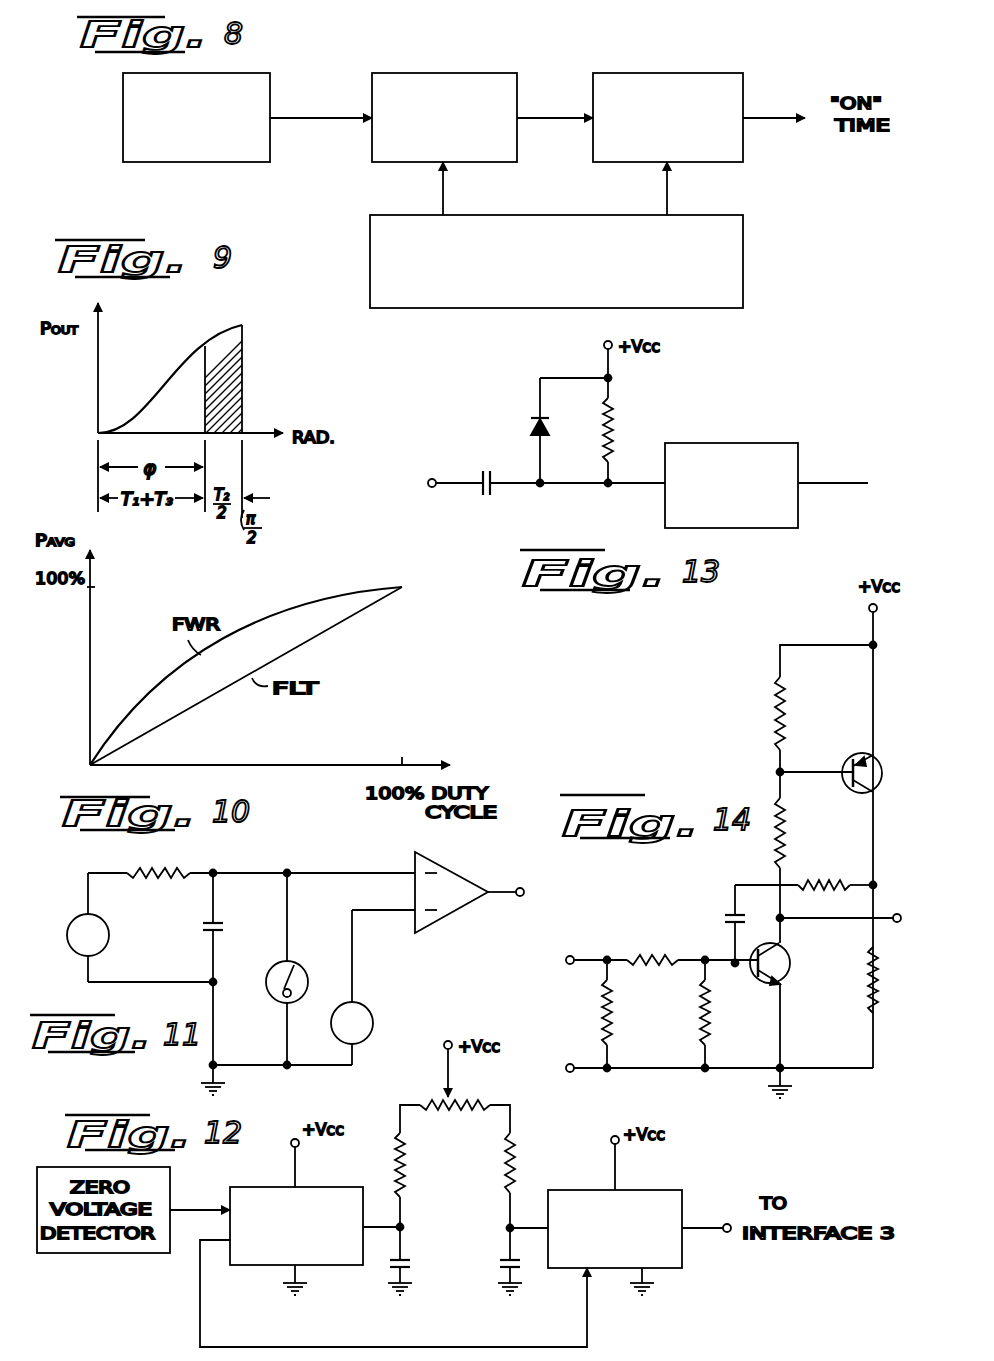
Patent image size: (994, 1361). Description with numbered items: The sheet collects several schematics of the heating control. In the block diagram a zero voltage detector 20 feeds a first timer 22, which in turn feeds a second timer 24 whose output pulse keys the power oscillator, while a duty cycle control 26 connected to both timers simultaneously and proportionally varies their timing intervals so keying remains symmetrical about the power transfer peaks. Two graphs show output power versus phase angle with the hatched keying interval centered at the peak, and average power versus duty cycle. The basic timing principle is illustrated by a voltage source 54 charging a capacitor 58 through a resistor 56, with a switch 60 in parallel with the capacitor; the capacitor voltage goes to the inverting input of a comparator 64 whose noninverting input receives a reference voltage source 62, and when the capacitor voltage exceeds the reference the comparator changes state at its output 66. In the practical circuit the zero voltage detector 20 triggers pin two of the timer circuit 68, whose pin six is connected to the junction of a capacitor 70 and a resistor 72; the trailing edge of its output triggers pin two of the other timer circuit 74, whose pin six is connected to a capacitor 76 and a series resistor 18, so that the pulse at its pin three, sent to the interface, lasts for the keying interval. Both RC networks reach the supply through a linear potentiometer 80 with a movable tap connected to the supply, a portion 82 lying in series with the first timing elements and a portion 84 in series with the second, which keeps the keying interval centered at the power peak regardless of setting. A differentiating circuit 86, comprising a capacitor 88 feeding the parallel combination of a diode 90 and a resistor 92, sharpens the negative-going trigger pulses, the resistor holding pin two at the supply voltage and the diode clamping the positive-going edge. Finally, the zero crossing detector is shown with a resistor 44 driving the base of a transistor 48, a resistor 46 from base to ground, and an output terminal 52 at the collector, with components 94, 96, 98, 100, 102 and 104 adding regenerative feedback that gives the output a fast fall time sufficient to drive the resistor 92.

In FIG. 8, the zero voltage detector 20 is at (232, 163).
In FIG. 8, the first timer 22 is at (405, 150).
In FIG. 12, the first timer 22 is at (330, 1180).
In FIG. 8, the second timer 24 is at (620, 150).
In FIG. 12, the second timer 24 is at (575, 1183).
In FIG. 8, the duty cycle control 26 is at (713, 225).
In FIG. 11, the voltage source 54 is at (99, 937).
In FIG. 11, the resistor 56 is at (172, 868).
In FIG. 11, the capacitor 58 is at (207, 938).
In FIG. 11, the switch 60 is at (268, 1003).
In FIG. 11, the reference voltage source 62 is at (368, 1022).
In FIG. 11, the comparator 64 is at (415, 863).
In FIG. 11, the output 66 is at (520, 888).
In FIG. 12, the NE555 circuit 68 is at (258, 1190).
In FIG. 13, the NE555 circuit 68 is at (718, 446).
In FIG. 12, the capacitor 70 is at (406, 1257).
In FIG. 12, the resistor 72 is at (406, 1168).
In FIG. 12, the potentiometer 80 is at (458, 1118).
In FIG. 12, the portion 82 is at (430, 1092).
In FIG. 12, the portion 84 is at (490, 1098).
In FIG. 12, the resistor 18 is at (516, 1165).
In FIG. 12, the capacitor 76 is at (505, 1258).
In FIG. 12, the NE555 circuit 74 is at (660, 1195).
In FIG. 13, the capacitor 88 is at (481, 478).
In FIG. 13, the diode 90 is at (532, 428).
In FIG. 13, the resistor 92 is at (614, 425).
In FIG. 13, the differentiating circuit 86 is at (570, 490).
In FIG. 14, the regenerative feedback component 98 is at (786, 715).
In FIG. 14, the regenerative feedback component 96 is at (868, 794).
In FIG. 14, the regenerative feedback component 100 is at (786, 832).
In FIG. 14, the regenerative feedback component 102 is at (848, 860).
In FIG. 14, the regenerative feedback component 104 is at (732, 913).
In FIG. 14, the output terminal 52 is at (908, 898).
In FIG. 14, the resistor 44 is at (664, 936).
In FIG. 14, the transistor 48 is at (791, 958).
In FIG. 14, the resistor 46 is at (699, 1013).
In FIG. 14, the regenerative feedback component 94 is at (866, 983).